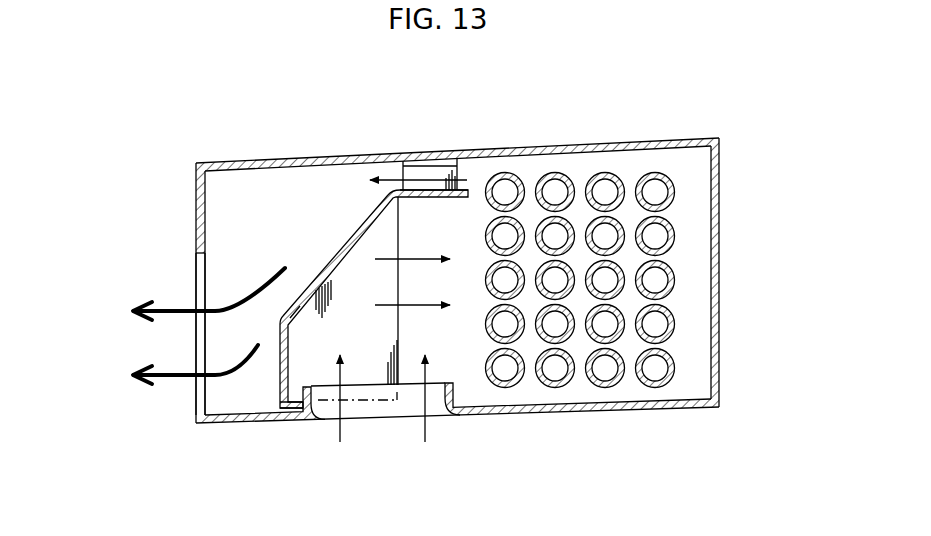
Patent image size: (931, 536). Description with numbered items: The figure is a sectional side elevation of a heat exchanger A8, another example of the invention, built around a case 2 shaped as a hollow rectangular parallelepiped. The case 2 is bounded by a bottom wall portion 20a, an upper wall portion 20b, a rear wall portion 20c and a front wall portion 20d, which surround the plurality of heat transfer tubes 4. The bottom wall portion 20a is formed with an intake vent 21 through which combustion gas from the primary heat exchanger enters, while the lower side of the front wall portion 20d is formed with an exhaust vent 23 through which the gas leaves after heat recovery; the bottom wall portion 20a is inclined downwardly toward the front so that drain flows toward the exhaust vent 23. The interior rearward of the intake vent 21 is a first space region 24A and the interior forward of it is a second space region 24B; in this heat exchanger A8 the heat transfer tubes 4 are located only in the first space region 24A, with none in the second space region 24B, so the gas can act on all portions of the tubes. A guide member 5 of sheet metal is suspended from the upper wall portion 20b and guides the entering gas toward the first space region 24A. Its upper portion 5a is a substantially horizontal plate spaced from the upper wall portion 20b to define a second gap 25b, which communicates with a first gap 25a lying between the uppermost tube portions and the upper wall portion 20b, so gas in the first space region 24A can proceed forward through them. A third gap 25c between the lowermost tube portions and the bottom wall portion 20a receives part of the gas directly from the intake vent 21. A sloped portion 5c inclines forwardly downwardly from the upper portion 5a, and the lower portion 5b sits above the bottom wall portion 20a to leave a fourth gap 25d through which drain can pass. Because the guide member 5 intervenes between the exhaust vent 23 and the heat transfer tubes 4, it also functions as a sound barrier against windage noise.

The case 2 is at (456, 295).
The bottom wall portion 20a is at (598, 414).
The upper wall portion 20b is at (347, 157).
The rear wall portion 20c is at (722, 273).
The front wall portion 20d is at (200, 207).
The exhaust vent 23 is at (200, 277).
The first space region 24A is at (692, 379).
The second space region 24B is at (228, 403).
The first gap 25a is at (497, 168).
The second gap 25b is at (428, 172).
The third gap 25c is at (505, 400).
The fourth gap 25d is at (285, 413).
The intake vent 21 is at (403, 413).
The heat transfer tubes 4 is at (645, 176).
The guide member 5 is at (359, 332).
The upper portion 5a is at (432, 200).
The lower portion 5b is at (278, 400).
The sloped portion 5c is at (330, 284).
The heat exchanger A8 is at (195, 123).